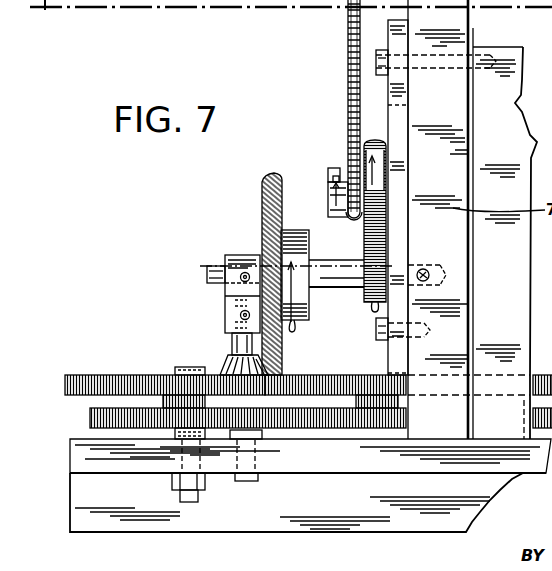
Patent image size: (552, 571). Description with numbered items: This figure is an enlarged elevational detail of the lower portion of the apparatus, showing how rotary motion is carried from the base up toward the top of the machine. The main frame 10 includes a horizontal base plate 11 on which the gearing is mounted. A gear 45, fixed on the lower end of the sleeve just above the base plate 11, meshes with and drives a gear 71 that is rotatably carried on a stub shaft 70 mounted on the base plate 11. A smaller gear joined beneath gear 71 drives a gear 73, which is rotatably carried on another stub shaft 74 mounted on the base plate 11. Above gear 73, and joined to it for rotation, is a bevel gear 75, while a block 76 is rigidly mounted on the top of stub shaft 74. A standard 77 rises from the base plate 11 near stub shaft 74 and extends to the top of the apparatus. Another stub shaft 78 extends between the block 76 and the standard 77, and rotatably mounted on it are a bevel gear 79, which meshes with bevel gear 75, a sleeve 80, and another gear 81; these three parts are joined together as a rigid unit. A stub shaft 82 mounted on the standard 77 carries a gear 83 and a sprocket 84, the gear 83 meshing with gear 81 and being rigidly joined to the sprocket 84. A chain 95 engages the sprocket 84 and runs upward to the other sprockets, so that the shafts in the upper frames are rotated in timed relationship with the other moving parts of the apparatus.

The main frame 10 is at (162, 532).
The base plate 11 is at (80, 458).
The gear 45 is at (331, 376).
The stub shaft 70 is at (190, 368).
The gear 71 is at (115, 377).
The gear 73 is at (308, 429).
The stub shaft 74 is at (247, 481).
The bevel gear 75 is at (222, 366).
The block 76 is at (235, 291).
The standard 77 is at (447, 22).
The stub shaft 78 is at (215, 268).
The bevel gear 79 is at (262, 185).
The sleeve 80 is at (331, 287).
The gear 81 is at (366, 300).
The stub shaft 82 is at (331, 204).
The gear 83 is at (394, 195).
The sprocket 84 is at (330, 216).
The chain 95 is at (347, 74).